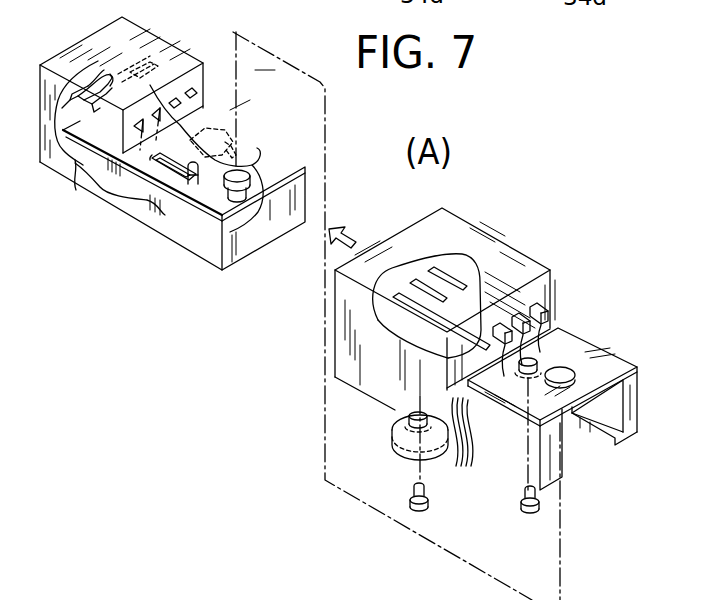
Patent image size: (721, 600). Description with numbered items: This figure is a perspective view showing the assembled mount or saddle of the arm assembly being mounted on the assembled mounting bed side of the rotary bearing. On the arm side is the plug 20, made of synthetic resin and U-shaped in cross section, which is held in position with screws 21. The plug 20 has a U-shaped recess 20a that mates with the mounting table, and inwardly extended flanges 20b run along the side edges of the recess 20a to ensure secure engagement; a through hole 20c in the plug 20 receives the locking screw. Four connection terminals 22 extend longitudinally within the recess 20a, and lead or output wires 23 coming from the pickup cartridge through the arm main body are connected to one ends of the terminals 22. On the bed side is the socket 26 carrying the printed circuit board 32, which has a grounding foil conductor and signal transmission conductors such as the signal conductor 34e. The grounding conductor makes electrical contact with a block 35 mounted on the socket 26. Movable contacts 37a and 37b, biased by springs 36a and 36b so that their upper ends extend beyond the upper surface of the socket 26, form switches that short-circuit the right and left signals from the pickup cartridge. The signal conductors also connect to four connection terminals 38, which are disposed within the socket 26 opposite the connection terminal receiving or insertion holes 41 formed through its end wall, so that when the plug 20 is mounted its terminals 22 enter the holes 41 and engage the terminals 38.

The plug 20 is at (602, 353).
The U-shaped recess 20a is at (613, 398).
The inwardly extended flanges 20b is at (625, 440).
The through hole 20c is at (566, 372).
The screws 21 is at (414, 510).
The connection terminals 22 is at (470, 258).
The lead or output wires 23 is at (458, 460).
The socket 26 is at (97, 201).
The printed circuit board 32 is at (90, 148).
The signal transmission conductor 34e is at (480, 0).
The block 35 is at (245, 170).
The spring 36a is at (168, 186).
The spring 36b is at (212, 134).
The movable contact 37a is at (165, 165).
The movable contact 37b is at (256, 132).
The connection terminals 38 is at (124, 112).
The connection terminal receiving or insertion holes 41 is at (197, 88).